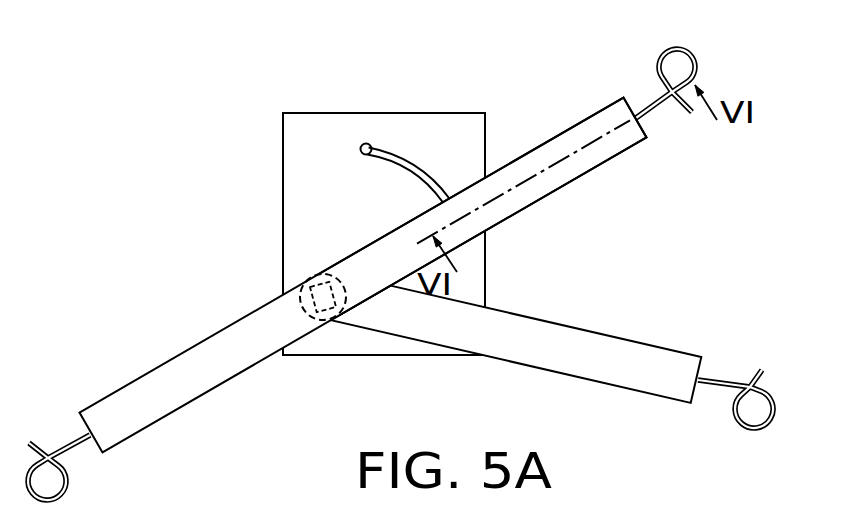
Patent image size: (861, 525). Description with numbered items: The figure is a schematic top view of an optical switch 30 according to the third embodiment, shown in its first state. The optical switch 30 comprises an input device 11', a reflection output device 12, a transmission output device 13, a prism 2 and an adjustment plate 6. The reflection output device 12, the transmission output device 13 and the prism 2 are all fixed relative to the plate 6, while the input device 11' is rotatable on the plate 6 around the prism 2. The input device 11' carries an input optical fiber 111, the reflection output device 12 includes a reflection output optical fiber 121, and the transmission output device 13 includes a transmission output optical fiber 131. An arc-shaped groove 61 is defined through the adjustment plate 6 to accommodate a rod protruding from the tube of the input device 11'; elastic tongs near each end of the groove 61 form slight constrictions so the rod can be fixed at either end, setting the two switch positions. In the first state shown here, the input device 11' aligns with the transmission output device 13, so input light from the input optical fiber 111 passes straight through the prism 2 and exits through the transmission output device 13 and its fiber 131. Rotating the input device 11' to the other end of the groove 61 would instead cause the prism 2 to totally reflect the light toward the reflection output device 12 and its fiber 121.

The prism 2 is at (318, 310).
The adjustment plate 6 is at (303, 178).
The arc-shaped groove 61 is at (365, 143).
The input device 11' is at (483, 177).
The input optical fiber 111 is at (667, 62).
The reflection output device 12 is at (613, 355).
The reflection output optical fiber 121 is at (756, 374).
The transmission output device 13 is at (233, 342).
The transmission output optical fiber 131 is at (67, 488).
The optical switch 30 is at (568, 250).